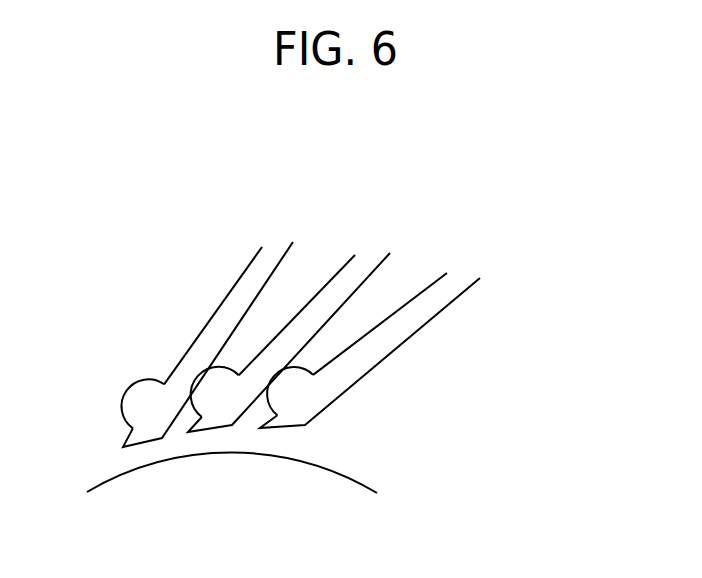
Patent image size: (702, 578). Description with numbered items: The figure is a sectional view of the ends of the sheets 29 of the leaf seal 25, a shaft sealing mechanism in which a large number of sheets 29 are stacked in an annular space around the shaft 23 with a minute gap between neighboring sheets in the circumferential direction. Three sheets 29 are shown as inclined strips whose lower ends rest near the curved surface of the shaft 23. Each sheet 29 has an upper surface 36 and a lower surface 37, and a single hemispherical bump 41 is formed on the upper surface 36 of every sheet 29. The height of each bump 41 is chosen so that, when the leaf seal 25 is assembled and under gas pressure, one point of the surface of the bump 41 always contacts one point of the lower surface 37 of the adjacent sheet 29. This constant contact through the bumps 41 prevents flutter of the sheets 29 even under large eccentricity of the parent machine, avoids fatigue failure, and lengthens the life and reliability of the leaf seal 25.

The shaft 23 is at (325, 492).
The leaf seal 25 is at (566, 165).
The sheet 29 is at (243, 278).
The upper surface 36 is at (210, 322).
The lower surface 37 is at (280, 268).
The hemispherical bump 41 is at (142, 400).